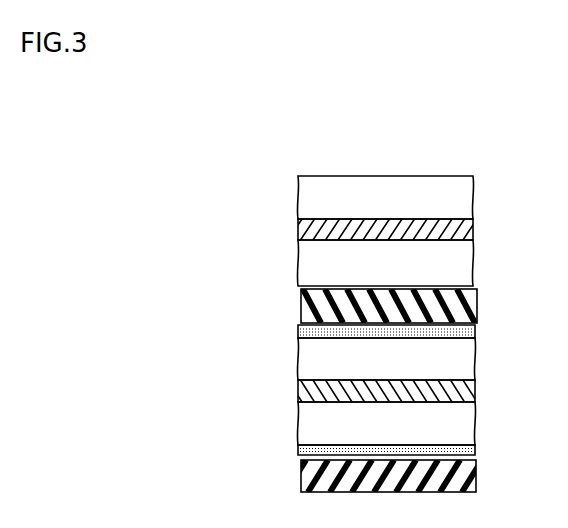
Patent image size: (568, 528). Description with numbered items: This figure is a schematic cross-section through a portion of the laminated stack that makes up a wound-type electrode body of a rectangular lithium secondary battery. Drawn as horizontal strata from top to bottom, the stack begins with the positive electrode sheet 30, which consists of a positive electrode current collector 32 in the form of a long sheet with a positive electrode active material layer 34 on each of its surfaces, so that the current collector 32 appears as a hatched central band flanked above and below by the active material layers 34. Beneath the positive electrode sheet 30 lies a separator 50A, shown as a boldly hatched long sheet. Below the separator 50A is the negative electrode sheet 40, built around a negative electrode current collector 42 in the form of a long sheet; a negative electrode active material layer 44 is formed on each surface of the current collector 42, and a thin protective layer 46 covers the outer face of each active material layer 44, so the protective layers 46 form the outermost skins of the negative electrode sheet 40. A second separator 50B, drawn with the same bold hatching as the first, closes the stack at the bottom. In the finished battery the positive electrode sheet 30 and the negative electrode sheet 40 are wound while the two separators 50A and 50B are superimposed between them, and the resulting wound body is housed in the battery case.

The positive electrode sheet 30 is at (386, 231).
The positive electrode current collector 32 is at (473, 232).
The positive electrode active material layer 34 is at (473, 194).
The negative electrode sheet 40 is at (392, 390).
The negative electrode current collector 42 is at (475, 393).
The negative electrode active material layer 44 is at (475, 356).
The protective layer 46 is at (476, 330).
The separator 50A is at (302, 305).
The separator 50B is at (302, 482).